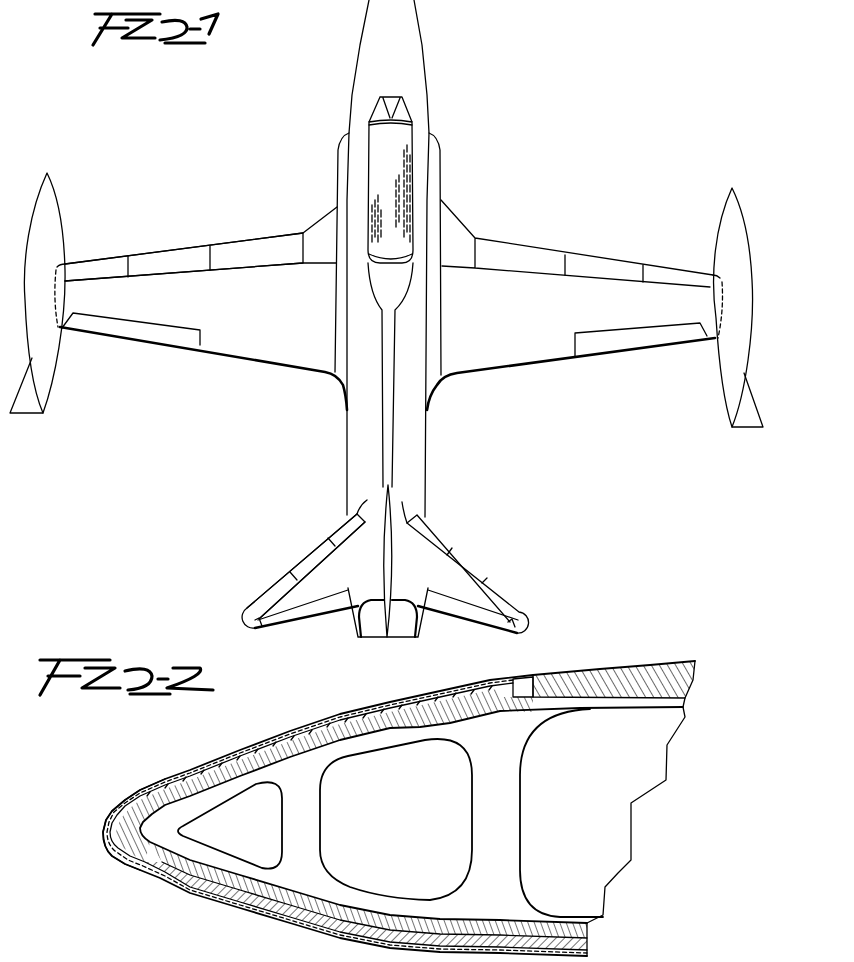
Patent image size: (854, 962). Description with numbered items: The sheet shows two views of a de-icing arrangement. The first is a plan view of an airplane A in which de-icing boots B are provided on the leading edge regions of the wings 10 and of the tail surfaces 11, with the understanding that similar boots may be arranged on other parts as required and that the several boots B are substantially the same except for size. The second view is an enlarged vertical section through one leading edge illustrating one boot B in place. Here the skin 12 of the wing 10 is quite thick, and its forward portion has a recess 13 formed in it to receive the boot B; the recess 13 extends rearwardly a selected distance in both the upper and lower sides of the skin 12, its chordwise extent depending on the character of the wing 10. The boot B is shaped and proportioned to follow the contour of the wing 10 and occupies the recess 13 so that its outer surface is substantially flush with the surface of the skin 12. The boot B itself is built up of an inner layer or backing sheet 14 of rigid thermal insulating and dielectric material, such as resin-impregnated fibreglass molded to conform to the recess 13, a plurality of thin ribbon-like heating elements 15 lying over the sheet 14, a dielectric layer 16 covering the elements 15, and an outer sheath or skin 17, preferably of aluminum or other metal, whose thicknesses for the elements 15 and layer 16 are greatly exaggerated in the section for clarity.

In FIG. 1, the wing 10 is at (250, 304).
In FIG. 2, the wing 10 is at (658, 656).
In FIG. 1, the tail surfaces 11 is at (430, 577).
In FIG. 2, the skin 12 is at (594, 678).
In FIG. 2, the recess 13 is at (518, 682).
In FIG. 2, the inner layer or sheet 14 is at (426, 710).
In FIG. 2, the heating elements 15 is at (373, 711).
In FIG. 2, the dielectric layer 16 is at (330, 722).
In FIG. 2, the outer sheath or skin 17 is at (268, 732).
In FIG. 1, the airplane A is at (448, 459).
In FIG. 1, the boot B is at (235, 253).
In FIG. 2, the boot B is at (208, 755).